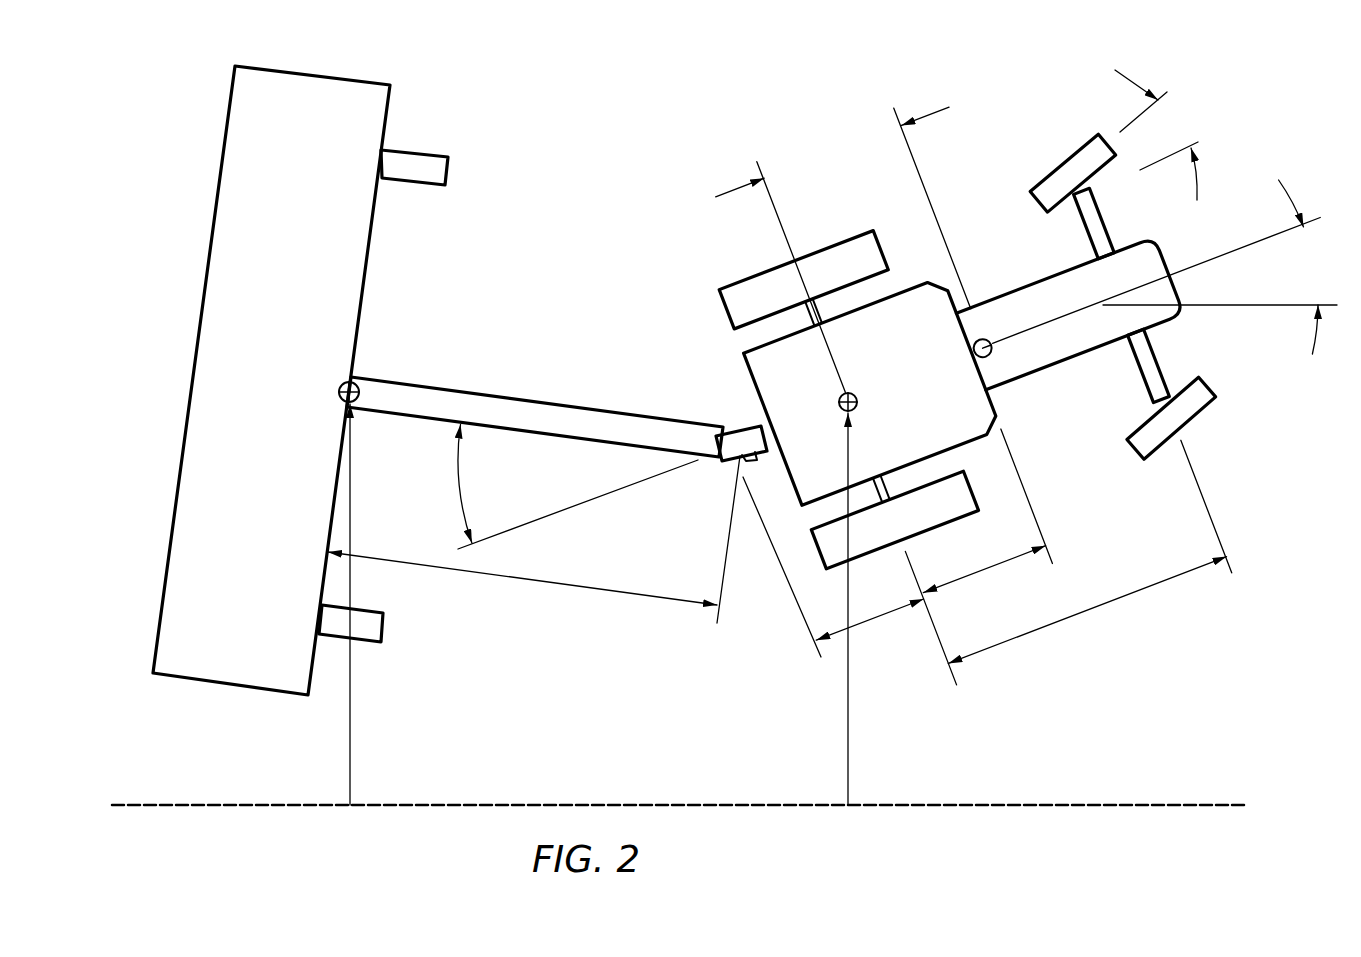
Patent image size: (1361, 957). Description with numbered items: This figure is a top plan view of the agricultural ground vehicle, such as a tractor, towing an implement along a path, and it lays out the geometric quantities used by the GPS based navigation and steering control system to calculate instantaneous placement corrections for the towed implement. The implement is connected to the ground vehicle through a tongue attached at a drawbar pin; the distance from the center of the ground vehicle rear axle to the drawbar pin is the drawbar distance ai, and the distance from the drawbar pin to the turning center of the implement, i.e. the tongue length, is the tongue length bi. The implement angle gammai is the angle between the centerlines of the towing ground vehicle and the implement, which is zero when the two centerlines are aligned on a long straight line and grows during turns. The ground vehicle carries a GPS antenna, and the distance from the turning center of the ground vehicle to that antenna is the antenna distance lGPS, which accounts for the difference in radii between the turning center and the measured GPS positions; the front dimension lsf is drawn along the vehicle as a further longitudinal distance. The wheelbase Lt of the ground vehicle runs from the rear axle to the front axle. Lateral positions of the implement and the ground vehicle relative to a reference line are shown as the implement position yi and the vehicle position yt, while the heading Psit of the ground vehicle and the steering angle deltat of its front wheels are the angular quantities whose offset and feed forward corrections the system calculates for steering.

The distance from the turning center of the ground vehicle to the GPS antenna lGPS is at (832, 152).
The distance from rear axle to front of tractor body lsf is at (984, 582).
The distance from the center of the ground vehicle rear axle to the drawbar pin ai is at (833, 574).
The wheelbase of the ground vehicle Lt is at (1087, 620).
The distance from the drawbar pin to the turning center of the implement bi is at (534, 543).
The implement angle gammai is at (578, 487).
The implement lateral position yi is at (371, 604).
The tractor lateral position yt is at (872, 609).
The heading Psit is at (1220, 267).
The steering angle deltat is at (1156, 135).